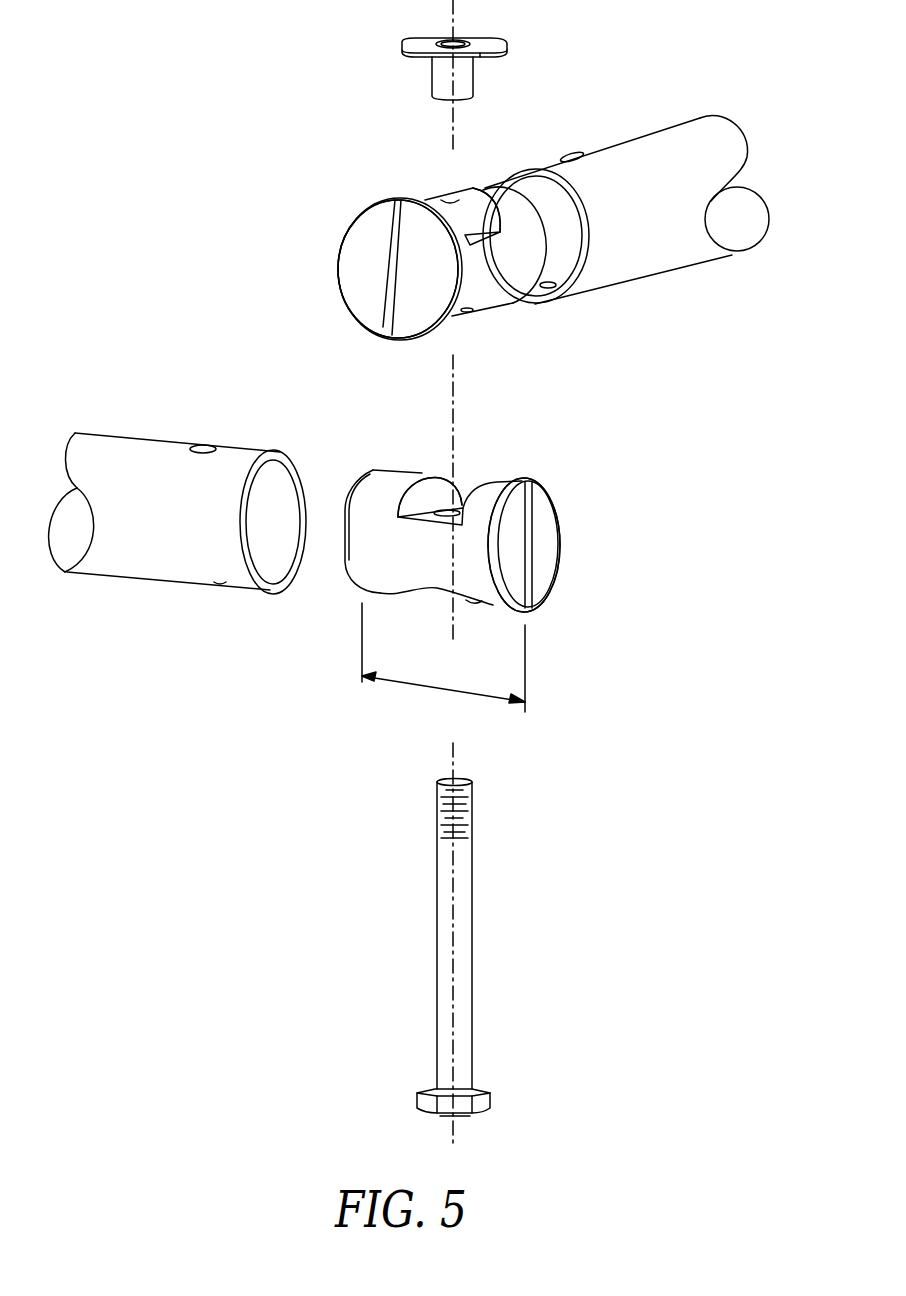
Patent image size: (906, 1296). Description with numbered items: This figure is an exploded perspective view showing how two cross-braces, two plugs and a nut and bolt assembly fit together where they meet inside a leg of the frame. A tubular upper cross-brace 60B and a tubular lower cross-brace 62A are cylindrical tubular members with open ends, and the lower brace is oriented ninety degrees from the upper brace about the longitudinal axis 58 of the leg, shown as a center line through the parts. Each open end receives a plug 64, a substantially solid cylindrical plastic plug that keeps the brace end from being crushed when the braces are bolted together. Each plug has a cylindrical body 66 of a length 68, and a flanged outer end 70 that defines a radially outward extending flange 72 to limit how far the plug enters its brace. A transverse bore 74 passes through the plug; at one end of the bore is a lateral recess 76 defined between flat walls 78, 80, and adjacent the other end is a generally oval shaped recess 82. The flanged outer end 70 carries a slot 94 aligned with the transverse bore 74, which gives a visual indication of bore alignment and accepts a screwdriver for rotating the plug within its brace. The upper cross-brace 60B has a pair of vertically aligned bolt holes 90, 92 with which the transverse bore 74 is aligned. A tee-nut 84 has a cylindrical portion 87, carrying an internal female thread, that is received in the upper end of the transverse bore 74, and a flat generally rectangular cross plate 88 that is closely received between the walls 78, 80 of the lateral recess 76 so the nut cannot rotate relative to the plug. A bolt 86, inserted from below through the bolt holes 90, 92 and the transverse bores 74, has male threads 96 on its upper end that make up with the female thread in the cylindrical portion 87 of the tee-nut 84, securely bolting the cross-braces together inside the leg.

The longitudinal axis 58 is at (450, 378).
The upper cross-brace 60B is at (670, 125).
The lower cross-brace 62A is at (97, 441).
The plug 64 is at (355, 237).
The cylindrical body 66 is at (360, 543).
The length 68 is at (423, 688).
The flanged outer end 70 is at (362, 265).
The flange 72 is at (516, 480).
The transverse bore 74 is at (458, 503).
The lateral recess 76 is at (437, 200).
The flat wall 78 is at (437, 200).
The flat wall 80 is at (470, 502).
The oval shaped recess 82 is at (476, 603).
The tee-nut 84 is at (498, 40).
The bolt 86 is at (470, 944).
The cylindrical portion 87 is at (470, 78).
The cross plate 88 is at (428, 40).
The bolt hole 90 is at (572, 154).
The bolt hole 92 is at (548, 290).
The slot 94 is at (390, 292).
The male threads 96 is at (460, 810).